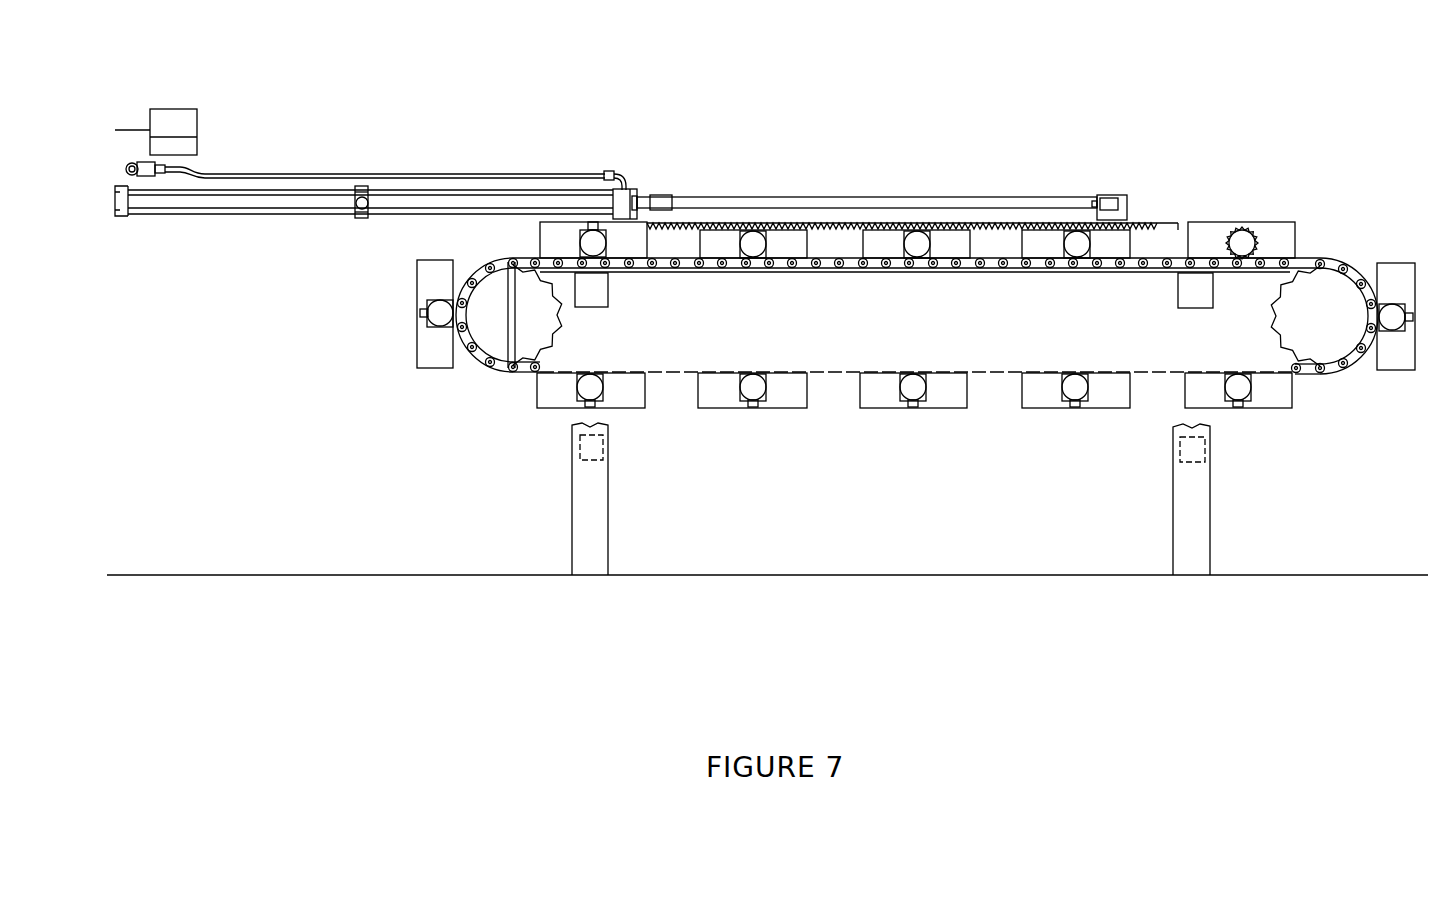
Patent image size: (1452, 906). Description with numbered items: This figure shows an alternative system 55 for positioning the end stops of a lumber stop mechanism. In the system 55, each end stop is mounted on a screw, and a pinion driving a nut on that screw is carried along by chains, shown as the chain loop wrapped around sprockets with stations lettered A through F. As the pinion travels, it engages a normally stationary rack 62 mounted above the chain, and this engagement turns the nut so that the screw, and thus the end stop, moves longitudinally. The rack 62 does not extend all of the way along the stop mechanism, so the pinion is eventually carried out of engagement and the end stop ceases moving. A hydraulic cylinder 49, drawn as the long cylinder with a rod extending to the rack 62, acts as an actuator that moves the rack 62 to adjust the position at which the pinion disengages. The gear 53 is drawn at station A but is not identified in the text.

The alternative system 55 is at (668, 70).
The hydraulic cylinder 49 is at (626, 176).
The rack 62 is at (1146, 223).
The drive gear 53 is at (1257, 234).